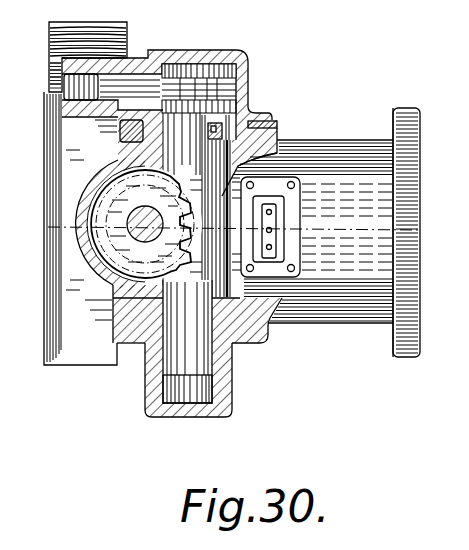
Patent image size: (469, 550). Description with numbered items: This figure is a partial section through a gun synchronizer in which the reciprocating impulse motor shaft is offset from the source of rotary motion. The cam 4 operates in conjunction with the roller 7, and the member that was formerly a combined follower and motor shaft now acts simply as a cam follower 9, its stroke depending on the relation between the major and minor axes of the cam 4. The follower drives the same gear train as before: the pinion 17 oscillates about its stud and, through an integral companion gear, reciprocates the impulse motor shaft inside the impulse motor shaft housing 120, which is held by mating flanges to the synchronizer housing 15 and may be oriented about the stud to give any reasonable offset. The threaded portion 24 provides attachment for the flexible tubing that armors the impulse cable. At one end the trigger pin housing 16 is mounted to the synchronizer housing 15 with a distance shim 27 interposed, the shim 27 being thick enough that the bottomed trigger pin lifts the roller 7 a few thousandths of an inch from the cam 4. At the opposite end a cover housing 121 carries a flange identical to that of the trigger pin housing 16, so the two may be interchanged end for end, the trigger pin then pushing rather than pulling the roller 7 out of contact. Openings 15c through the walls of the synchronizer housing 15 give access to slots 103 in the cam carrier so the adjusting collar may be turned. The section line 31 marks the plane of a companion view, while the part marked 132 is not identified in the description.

The cam 4 is at (240, 305).
The roller 7 is at (217, 123).
The cam follower 9 is at (223, 387).
The synchronizer housing 15 is at (357, 152).
The openings 15c is at (272, 193).
The trigger pin housing 16 is at (173, 50).
The pinion 17 is at (113, 250).
The threaded portion 24 is at (49, 44).
The distance shim 27 is at (258, 120).
The section line 31 is at (82, 227).
The slots 103 is at (288, 222).
The impulse motor shaft housing 120 is at (76, 355).
The cover housing 121 is at (161, 411).
The slot 132 is at (285, 240).